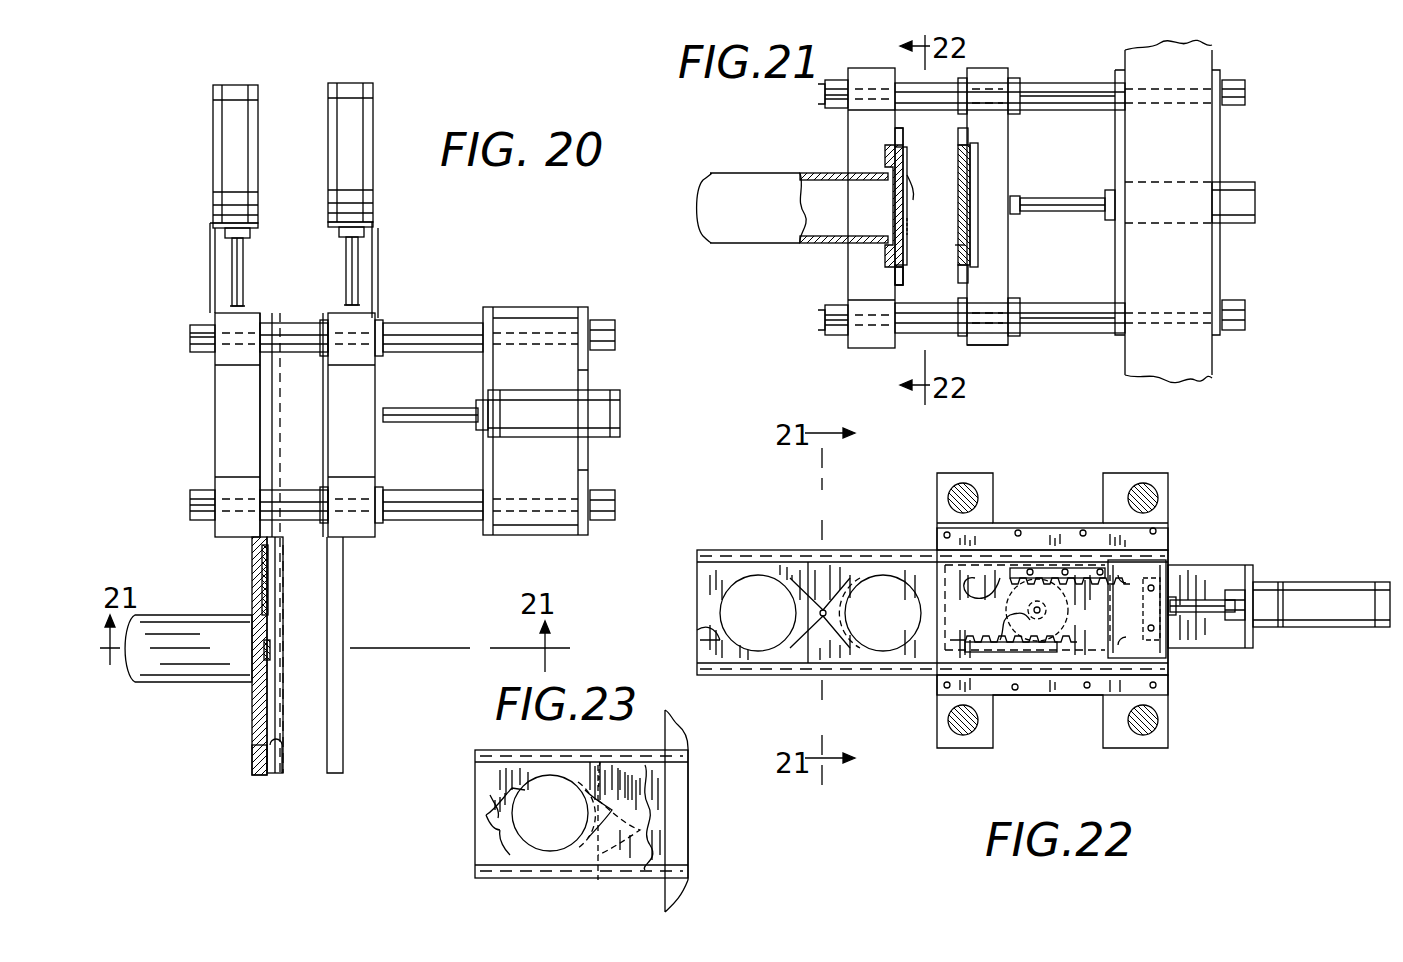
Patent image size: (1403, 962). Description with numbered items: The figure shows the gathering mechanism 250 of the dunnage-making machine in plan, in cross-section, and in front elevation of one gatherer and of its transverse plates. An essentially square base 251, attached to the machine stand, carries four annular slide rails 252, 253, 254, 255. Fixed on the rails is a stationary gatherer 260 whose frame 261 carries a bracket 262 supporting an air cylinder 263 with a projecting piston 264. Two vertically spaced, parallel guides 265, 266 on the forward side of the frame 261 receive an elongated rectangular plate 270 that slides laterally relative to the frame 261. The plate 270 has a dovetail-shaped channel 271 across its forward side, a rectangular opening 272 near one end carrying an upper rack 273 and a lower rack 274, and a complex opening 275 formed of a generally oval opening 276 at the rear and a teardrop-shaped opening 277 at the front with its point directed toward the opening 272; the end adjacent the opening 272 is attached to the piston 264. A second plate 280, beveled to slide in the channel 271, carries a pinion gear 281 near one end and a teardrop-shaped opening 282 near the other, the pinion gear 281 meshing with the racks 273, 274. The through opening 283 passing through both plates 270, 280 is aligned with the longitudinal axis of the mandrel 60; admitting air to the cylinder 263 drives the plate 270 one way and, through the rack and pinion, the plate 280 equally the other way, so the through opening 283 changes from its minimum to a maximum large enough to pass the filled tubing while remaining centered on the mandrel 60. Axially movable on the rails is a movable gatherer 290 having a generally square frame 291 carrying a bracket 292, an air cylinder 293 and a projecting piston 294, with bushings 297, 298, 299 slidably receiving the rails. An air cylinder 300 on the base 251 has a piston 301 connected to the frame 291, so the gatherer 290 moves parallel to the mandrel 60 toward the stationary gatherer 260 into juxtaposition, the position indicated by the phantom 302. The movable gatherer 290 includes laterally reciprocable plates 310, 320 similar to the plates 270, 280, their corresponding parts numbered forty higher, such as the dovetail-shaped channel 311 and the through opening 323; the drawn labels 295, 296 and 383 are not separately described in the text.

In FIG. 20, the mandrel 60 is at (175, 670).
In FIG. 21, the mandrel 60 is at (748, 230).
In FIG. 20, the gathering mechanism 250 is at (450, 252).
In FIG. 21, the gathering mechanism 250 is at (1290, 85).
In FIG. 20, the base 251 is at (496, 307).
In FIG. 21, the base 251 is at (1200, 124).
In FIG. 20, the annular slide rail 252 is at (440, 522).
In FIG. 22, the annular slide rail 252 is at (963, 735).
In FIG. 20, the annular slide rail 253 is at (440, 323).
In FIG. 21, the annular slide rail 253 is at (1098, 333).
In FIG. 22, the annular slide rail 253 is at (948, 496).
In FIG. 21, the annular slide rail 254 is at (1100, 69).
In FIG. 22, the annular slide rail 254 is at (1156, 493).
In FIG. 22, the annular slide rail 255 is at (1157, 720).
In FIG. 20, the stationary gatherer 260 is at (200, 122).
In FIG. 21, the stationary gatherer 260 is at (838, 132).
In FIG. 22, the stationary gatherer 260 is at (1293, 787).
In FIG. 20, the frame 261 is at (215, 392).
In FIG. 21, the frame 261 is at (862, 150).
In FIG. 22, the frame 261 is at (945, 737).
In FIG. 23, the frame 261 is at (680, 894).
In FIG. 20, the bracket 262 is at (210, 262).
In FIG. 22, the bracket 262 is at (1255, 565).
In FIG. 20, the air cylinder 263 is at (256, 125).
In FIG. 22, the air cylinder 263 is at (1330, 620).
In FIG. 20, the projecting piston 264 is at (243, 268).
In FIG. 22, the projecting piston 264 is at (1210, 598).
In FIG. 21, the guide 265 is at (895, 272).
In FIG. 22, the guide 265 is at (1160, 685).
In FIG. 20, the guide 266 is at (260, 452).
In FIG. 21, the guide 266 is at (895, 130).
In FIG. 22, the guide 266 is at (1162, 535).
In FIG. 20, the plate 270 is at (245, 572).
In FIG. 21, the plate 270 is at (885, 254).
In FIG. 22, the plate 270 is at (722, 550).
In FIG. 23, the plate 270 is at (500, 750).
In FIG. 21, the dovetail-shaped channel 271 is at (887, 262).
In FIG. 22, the dovetail-shaped channel 271 is at (700, 638).
In FIG. 22, the rectangular-shaped opening 272 is at (1160, 656).
In FIG. 22, the rack 273 is at (1040, 575).
In FIG. 22, the rack 274 is at (988, 665).
In FIG. 22, the complex opening 275 is at (740, 606).
In FIG. 20, the oval-shaped opening 276 is at (252, 742).
In FIG. 23, the oval-shaped opening 276 is at (632, 754).
In FIG. 20, the teardrop-shaped opening 277 is at (278, 777).
In FIG. 23, the teardrop-shaped opening 277 is at (600, 880).
In FIG. 20, the plate 280 is at (272, 568).
In FIG. 22, the plate 280 is at (867, 663).
In FIG. 23, the plate 280 is at (500, 777).
In FIG. 22, the pinion gear 281 is at (1052, 625).
In FIG. 20, the teardrop-shaped opening 282 is at (272, 642).
In FIG. 22, the teardrop-shaped opening 282 is at (918, 640).
In FIG. 23, the teardrop-shaped opening 282 is at (500, 832).
In FIG. 22, the through opening 283 is at (820, 620).
In FIG. 23, the through opening 283 is at (565, 845).
In FIG. 20, the movable gatherer 290 is at (378, 94).
In FIG. 21, the movable gatherer 290 is at (1005, 350).
In FIG. 20, the frame 291 is at (362, 385).
In FIG. 21, the frame 291 is at (985, 345).
In FIG. 20, the bracket 292 is at (378, 270).
In FIG. 20, the air cylinder 293 is at (373, 118).
In FIG. 20, the projecting piston 294 is at (346, 270).
In FIG. 21, the spacer plate 295 is at (968, 275).
In FIG. 21, the spacer plate 296 is at (903, 132).
In FIG. 20, the bushing 297 is at (383, 492).
In FIG. 20, the bushing 298 is at (383, 322).
In FIG. 21, the bushing 298 is at (1015, 305).
In FIG. 21, the bushing 299 is at (1000, 82).
In FIG. 20, the air cylinder 300 is at (600, 390).
In FIG. 21, the air cylinder 300 is at (1255, 202).
In FIG. 20, the piston 301 is at (420, 410).
In FIG. 21, the piston 301 is at (1085, 178).
In FIG. 20, the phantom 302 is at (285, 777).
In FIG. 21, the laterally-reciprocable plate 310 is at (975, 258).
In FIG. 21, the dovetail-shaped channel 311 is at (918, 148).
In FIG. 21, the laterally-reciprocable plate 320 is at (960, 245).
In FIG. 21, the through opening 323 is at (950, 222).
In FIG. 21, the gap 383 is at (912, 200).